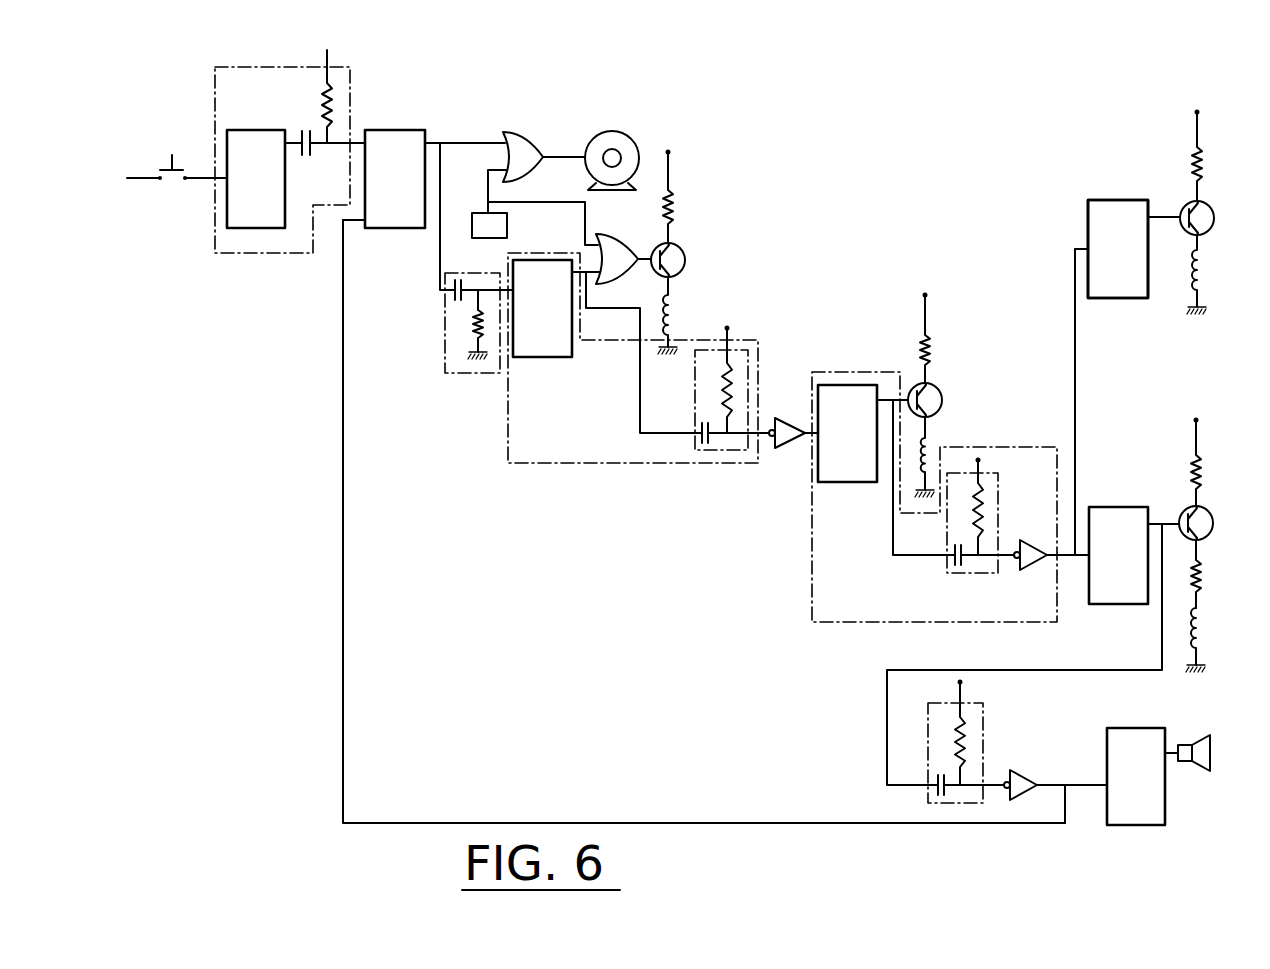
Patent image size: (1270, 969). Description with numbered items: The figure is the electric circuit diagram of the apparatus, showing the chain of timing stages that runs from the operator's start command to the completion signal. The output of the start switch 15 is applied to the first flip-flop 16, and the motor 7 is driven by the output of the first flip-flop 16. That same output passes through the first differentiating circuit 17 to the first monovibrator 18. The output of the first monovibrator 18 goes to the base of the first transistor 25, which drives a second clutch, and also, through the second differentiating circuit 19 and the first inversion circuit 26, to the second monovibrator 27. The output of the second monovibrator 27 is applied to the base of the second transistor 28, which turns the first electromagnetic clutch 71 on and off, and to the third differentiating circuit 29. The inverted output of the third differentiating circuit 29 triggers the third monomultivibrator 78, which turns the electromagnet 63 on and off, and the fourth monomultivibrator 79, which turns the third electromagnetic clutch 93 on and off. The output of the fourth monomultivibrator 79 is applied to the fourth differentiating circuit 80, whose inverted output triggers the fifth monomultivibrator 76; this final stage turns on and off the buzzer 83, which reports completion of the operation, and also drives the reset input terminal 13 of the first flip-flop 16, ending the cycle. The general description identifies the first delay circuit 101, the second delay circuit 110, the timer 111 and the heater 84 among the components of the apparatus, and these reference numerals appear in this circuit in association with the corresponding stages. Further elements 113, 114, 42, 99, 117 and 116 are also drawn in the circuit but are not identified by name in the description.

The start switch 15 is at (183, 160).
The first delay circuit 101 is at (243, 258).
The monostable multivibrator MM1 113 is at (247, 130).
The resistor 114 is at (345, 120).
The first flip-flop 16 is at (416, 130).
The reset input terminal 13 is at (355, 222).
The OR gate 42 is at (506, 132).
The motor 7 is at (615, 131).
The limit switch 99 is at (487, 202).
The OR gate 117 is at (600, 233).
The first transistor 25 is at (683, 244).
The first monovibrator 18 is at (540, 358).
The first differentiating circuit 17 is at (445, 374).
The timing circuit 116 is at (508, 450).
The second differentiating circuit 19 is at (718, 454).
The first inversion circuit 26 is at (788, 450).
The second monovibrator 27 is at (838, 483).
The second delay circuit 110 is at (922, 625).
The second transistor 28 is at (940, 393).
The first electromagnetic clutch 71 is at (930, 438).
The third differentiating circuit 29 is at (960, 572).
The third monomultivibrator 78 is at (1078, 224).
The timer 111 is at (1123, 200).
The electromagnet 63 is at (1204, 270).
The fourth monomultivibrator 79 is at (1112, 507).
The heater 84 is at (1203, 575).
The third electromagnetic clutch 93 is at (1206, 628).
The fourth differentiating circuit 80 is at (983, 708).
The fifth monomultivibrator 76 is at (1167, 797).
The buzzer 83 is at (1205, 738).